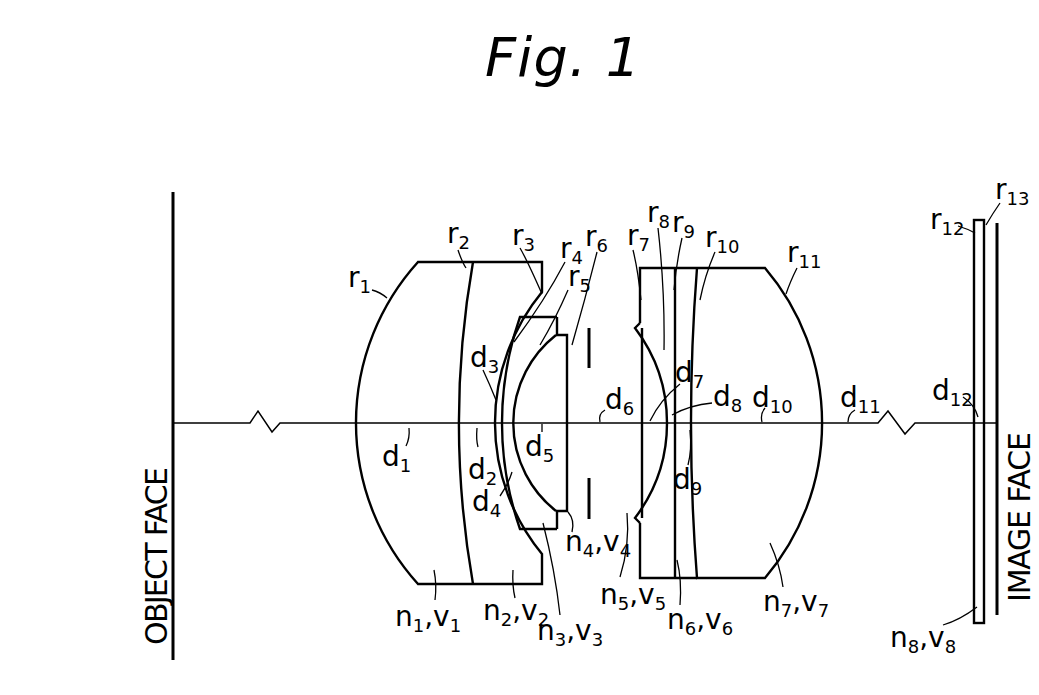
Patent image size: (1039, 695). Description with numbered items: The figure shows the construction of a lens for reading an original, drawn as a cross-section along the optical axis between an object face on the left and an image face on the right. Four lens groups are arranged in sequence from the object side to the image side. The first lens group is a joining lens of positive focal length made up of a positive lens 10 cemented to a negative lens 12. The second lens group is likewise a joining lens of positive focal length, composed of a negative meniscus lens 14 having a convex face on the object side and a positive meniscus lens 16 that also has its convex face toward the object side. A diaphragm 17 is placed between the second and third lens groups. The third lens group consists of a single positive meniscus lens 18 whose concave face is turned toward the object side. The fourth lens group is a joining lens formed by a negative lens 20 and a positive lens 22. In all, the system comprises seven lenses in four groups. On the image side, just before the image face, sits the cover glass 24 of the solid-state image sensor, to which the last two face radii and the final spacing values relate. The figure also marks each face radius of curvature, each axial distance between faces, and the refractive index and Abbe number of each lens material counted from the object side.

The positive lens 10 is at (432, 272).
The negative lens 12 is at (497, 262).
The negative meniscus lens 14 is at (548, 317).
The positive meniscus lens 16 is at (555, 405).
The diaphragm 17 is at (592, 350).
The positive meniscus lens 18 is at (650, 448).
The negative lens 20 is at (702, 292).
The positive lens 22 is at (745, 292).
The cover glass 24 is at (975, 295).